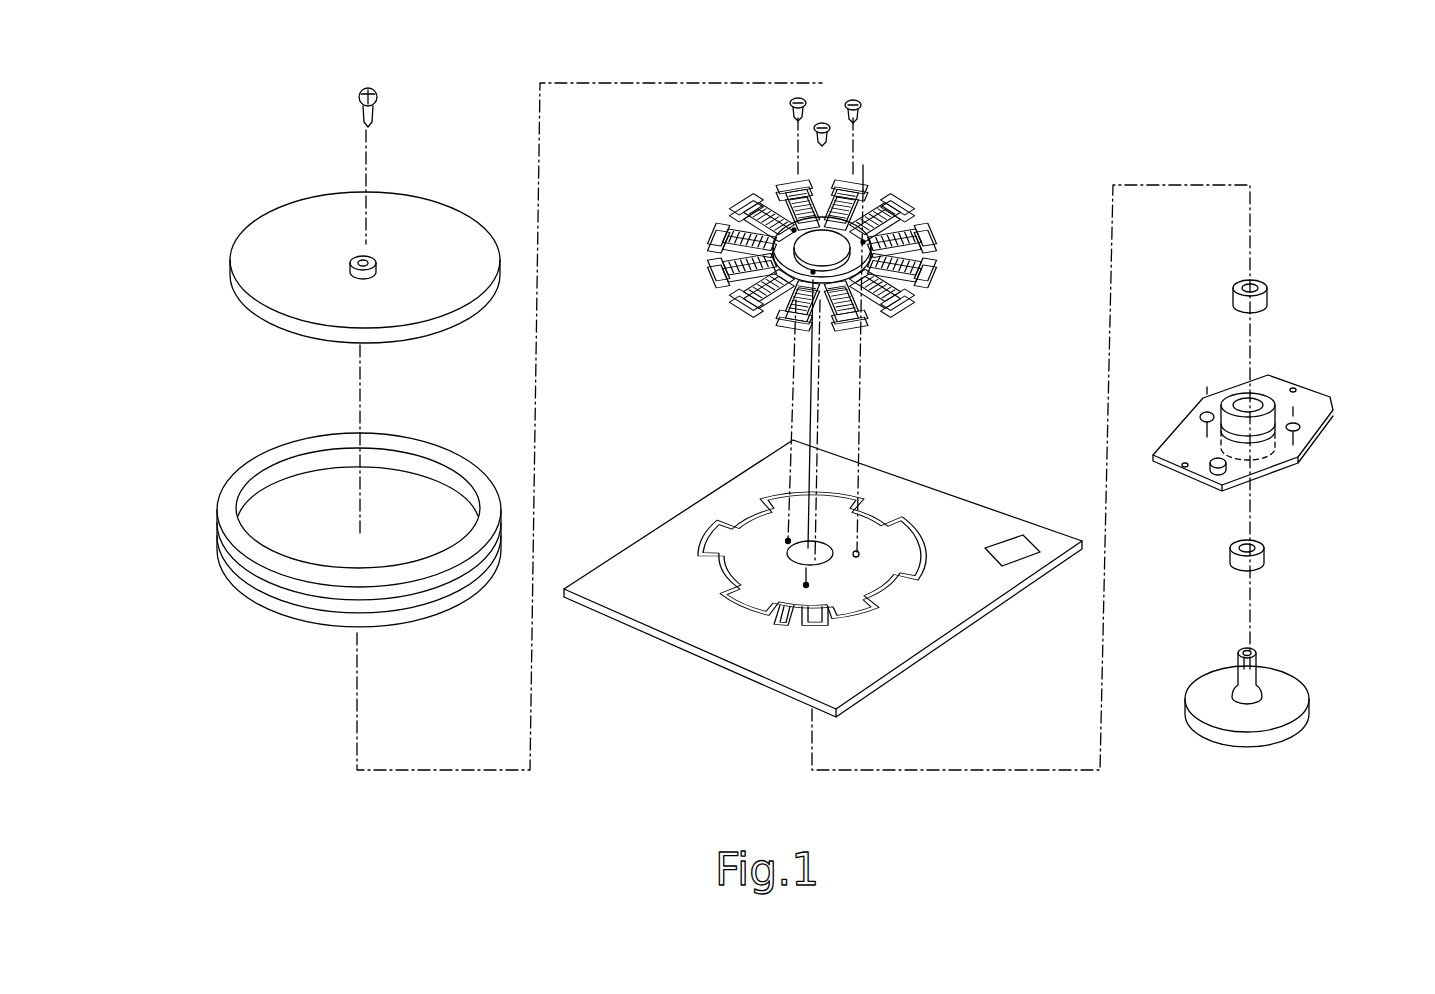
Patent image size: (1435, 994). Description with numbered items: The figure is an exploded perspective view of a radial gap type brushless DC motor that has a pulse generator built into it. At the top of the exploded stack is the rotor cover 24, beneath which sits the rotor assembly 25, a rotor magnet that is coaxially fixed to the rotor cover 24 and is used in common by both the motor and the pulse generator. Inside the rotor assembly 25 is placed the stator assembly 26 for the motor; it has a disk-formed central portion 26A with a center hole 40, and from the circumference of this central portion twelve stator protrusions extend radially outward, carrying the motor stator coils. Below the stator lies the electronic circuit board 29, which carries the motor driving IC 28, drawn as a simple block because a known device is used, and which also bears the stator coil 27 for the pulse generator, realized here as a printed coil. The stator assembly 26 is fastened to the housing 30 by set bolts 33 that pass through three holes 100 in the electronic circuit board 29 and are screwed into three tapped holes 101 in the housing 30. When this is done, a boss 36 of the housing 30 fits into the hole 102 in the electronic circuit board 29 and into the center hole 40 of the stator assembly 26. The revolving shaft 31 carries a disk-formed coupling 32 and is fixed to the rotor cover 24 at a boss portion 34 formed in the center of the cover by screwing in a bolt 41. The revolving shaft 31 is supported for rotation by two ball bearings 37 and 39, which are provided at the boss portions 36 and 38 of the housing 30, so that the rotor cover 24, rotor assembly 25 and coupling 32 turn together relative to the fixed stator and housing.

The rotor cover 24 is at (430, 212).
The rotor assembly (rotor magnet) 25 is at (430, 428).
The stator assembly for the motor 26 is at (824, 237).
The disk-formed central portion 26A is at (903, 288).
The stator coil for the pulse generator 27 is at (708, 532).
The motor driving IC 28 is at (1022, 540).
The electronic circuit board 29 is at (718, 640).
The housing 30 is at (1198, 425).
The revolving shaft 31 is at (1258, 666).
The disk-formed coupling 32 is at (1310, 698).
The set bolts 33 is at (852, 100).
The boss portion 34 is at (358, 273).
The boss 36 is at (1268, 394).
The ball bearing 37 is at (1268, 302).
The boss portion 38 is at (1262, 462).
The ball bearing 39 is at (1265, 553).
The center hole 40 is at (853, 237).
The bolt 41 is at (380, 100).
The holes 100 is at (859, 552).
The tapped holes 101 is at (1325, 410).
The hole 102 is at (826, 548).